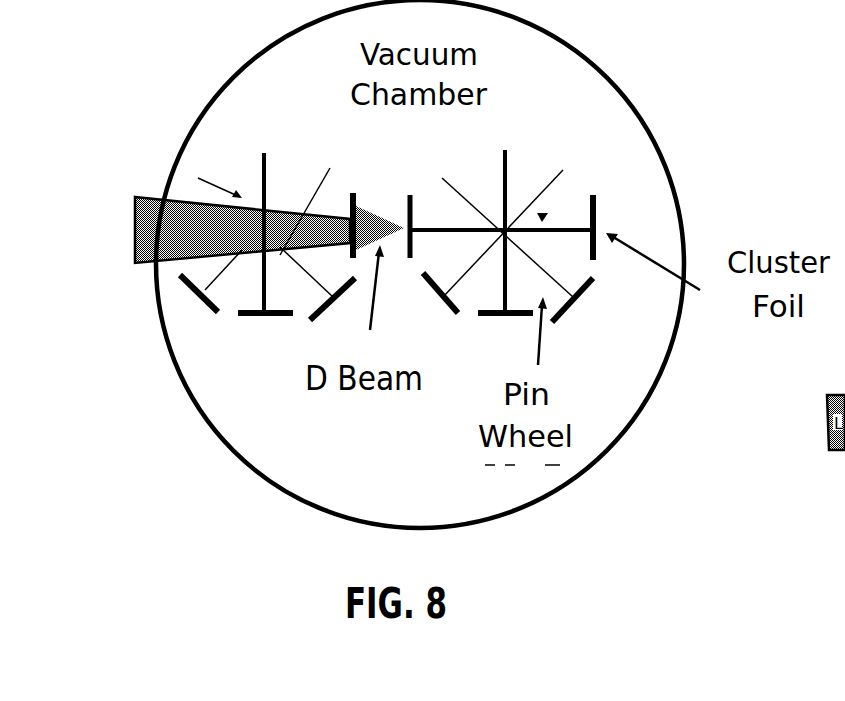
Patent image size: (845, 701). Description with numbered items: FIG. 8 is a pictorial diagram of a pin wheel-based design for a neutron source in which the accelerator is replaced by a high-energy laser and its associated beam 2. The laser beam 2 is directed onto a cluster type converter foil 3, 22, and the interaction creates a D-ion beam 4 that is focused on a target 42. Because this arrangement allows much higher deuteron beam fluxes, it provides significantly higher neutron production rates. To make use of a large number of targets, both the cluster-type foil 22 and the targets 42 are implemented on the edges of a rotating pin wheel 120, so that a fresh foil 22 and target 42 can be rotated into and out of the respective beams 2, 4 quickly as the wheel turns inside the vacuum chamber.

The high-energy laser beam 2 is at (145, 196).
The cluster type converter foil 3 is at (353, 190).
The cluster-type foil 22 is at (335, 196).
The D-ion beam 4 is at (381, 240).
The target 42 is at (410, 192).
The rotating pin wheel 120 is at (508, 215).